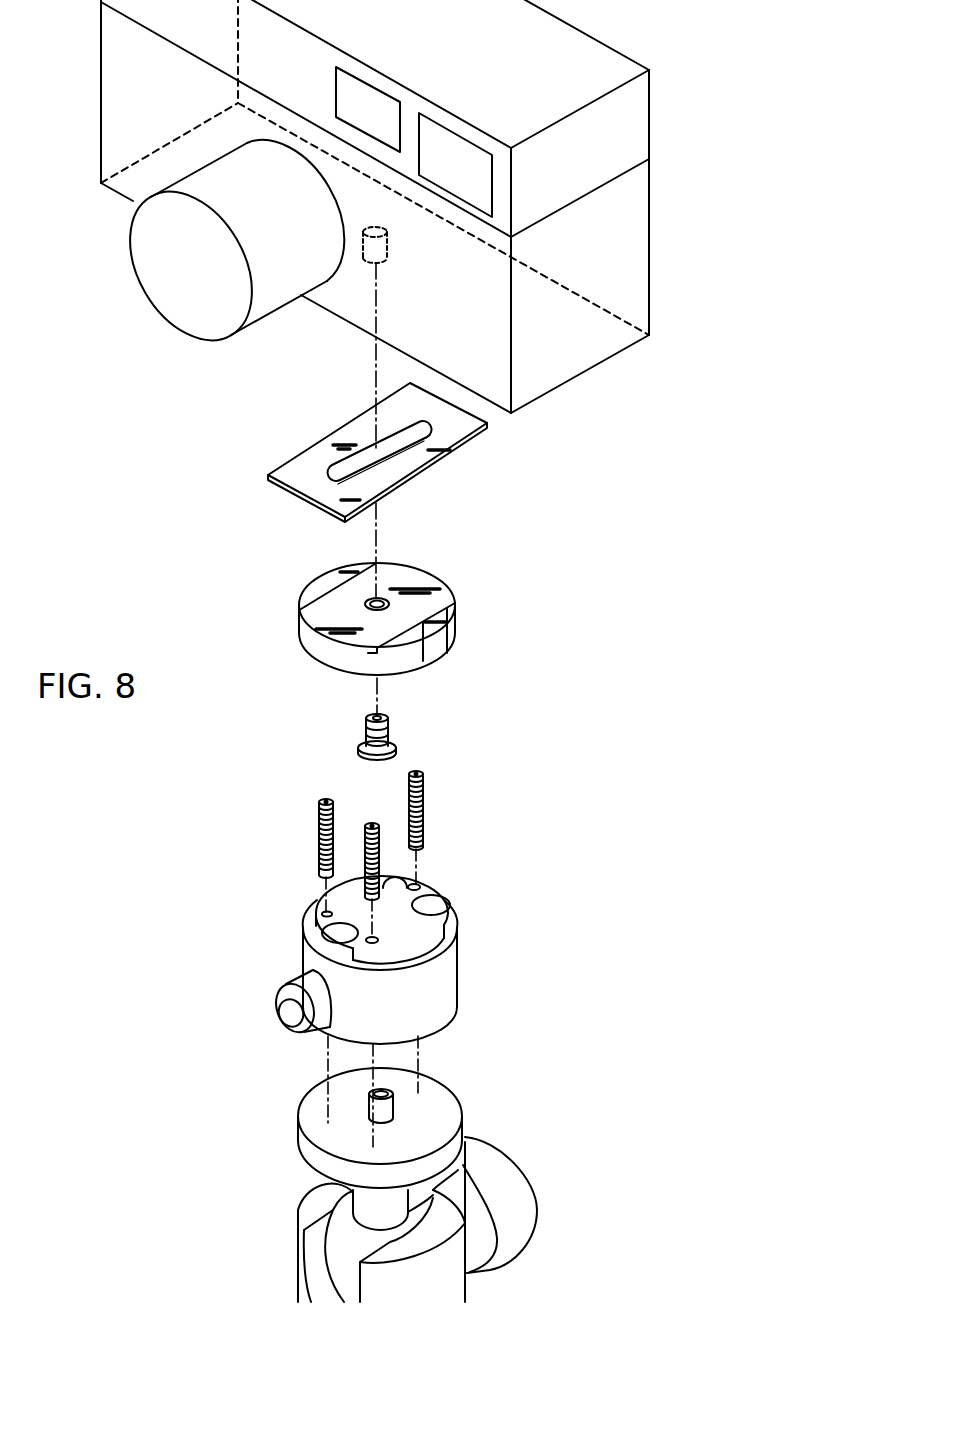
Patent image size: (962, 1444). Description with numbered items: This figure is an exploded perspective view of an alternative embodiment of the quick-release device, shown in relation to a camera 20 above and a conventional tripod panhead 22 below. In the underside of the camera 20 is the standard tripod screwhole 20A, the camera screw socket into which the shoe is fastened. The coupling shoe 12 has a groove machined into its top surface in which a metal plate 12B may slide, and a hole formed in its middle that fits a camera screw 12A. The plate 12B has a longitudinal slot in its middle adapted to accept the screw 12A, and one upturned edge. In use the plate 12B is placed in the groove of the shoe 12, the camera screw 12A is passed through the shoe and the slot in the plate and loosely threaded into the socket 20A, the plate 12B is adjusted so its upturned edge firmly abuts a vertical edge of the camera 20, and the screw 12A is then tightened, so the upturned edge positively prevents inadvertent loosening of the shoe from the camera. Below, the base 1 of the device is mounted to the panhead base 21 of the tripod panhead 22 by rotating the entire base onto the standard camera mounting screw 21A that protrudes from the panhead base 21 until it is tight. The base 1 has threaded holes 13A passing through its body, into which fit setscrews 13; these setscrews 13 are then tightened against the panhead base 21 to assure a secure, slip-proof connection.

The camera 20 is at (585, 372).
The standard tripod screwhole 20A is at (370, 263).
The metal plate 12B is at (433, 466).
The coupling shoe 12 is at (452, 645).
The camera screw 12A is at (390, 732).
The setscrews 13 is at (409, 795).
The threaded holes 13A is at (421, 887).
The base 1 is at (317, 911).
The panhead base 21 is at (303, 1101).
The standard camera mounting screw 21A is at (394, 1108).
The tripod panhead 22 is at (307, 1197).